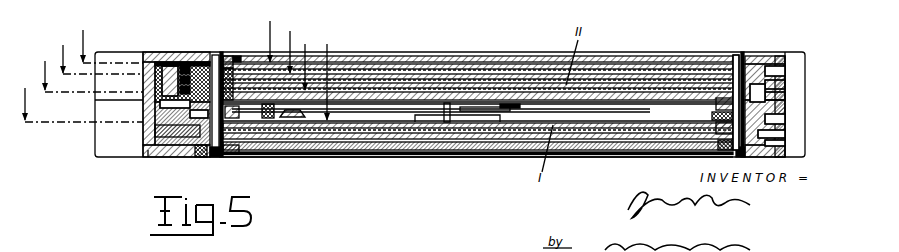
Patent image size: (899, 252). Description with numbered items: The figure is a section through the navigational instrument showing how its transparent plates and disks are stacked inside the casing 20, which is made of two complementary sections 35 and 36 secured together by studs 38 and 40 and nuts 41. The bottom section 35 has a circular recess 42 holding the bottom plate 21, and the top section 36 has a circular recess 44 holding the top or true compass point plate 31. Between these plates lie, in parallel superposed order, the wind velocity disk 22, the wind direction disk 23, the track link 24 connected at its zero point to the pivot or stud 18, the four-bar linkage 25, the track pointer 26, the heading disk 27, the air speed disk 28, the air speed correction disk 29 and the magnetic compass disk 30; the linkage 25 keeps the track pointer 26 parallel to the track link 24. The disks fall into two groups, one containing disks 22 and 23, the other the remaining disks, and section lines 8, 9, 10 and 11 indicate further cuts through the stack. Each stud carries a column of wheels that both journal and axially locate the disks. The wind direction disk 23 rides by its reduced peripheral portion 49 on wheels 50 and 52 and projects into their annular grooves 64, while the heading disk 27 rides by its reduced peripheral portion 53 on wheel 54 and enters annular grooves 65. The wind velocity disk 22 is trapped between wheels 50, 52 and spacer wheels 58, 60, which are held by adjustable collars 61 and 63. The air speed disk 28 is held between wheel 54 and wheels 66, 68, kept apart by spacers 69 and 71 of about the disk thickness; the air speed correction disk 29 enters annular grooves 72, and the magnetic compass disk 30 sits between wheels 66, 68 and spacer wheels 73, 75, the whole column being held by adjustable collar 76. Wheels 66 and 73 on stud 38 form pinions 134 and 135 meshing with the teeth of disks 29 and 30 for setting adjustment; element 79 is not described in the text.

The section line 8- 8 is at (176, 75).
The section line 9- 9 is at (175, 60).
The section line 10- 10 is at (177, 45).
The section line 11- 11 is at (179, 34).
The pivot or stud 18 is at (430, 107).
The casing 20 is at (90, 155).
The bottom plate 21 is at (462, 146).
The wind velocity disk 22 is at (432, 137).
The wind direction disk 23 is at (398, 128).
The track link 24 is at (645, 120).
The four-bar linkage 25 is at (495, 112).
The track pointer 26 is at (522, 110).
The heading disk 27 is at (485, 95).
The air speed disk 28 is at (460, 86).
The air speed correction disk 29 is at (441, 77).
The magnetic compass disk 30 is at (425, 66).
The top or true compass point plate 31 is at (400, 57).
The bottom casing section 35 is at (150, 155).
The top casing section 36 is at (163, 52).
The stud 38 is at (215, 58).
The stud 40 is at (736, 65).
The nuts 41 is at (228, 155).
The circular recess 42 is at (245, 155).
The circular recess 44 is at (238, 56).
The reduced peripheral portion 49 is at (288, 120).
The roller or wheel 50 is at (157, 132).
The roller or wheel 52 is at (784, 143).
The reduced peripheral portion 53 is at (272, 111).
The roller or wheel 54 is at (788, 95).
The spacer wheel 58 is at (203, 155).
The spacer wheel 60 is at (724, 152).
The adjustable collar 61 is at (236, 112).
The adjustable collar 63 is at (782, 118).
The annular grooves 64 is at (780, 130).
The annular grooves 65 is at (150, 88).
The wheel 66 is at (152, 72).
The wheel 68 is at (784, 72).
The spacer 69 is at (150, 82).
The spacer 71 is at (752, 72).
The annular grooves 72 is at (150, 64).
The spacer wheel 73 is at (195, 62).
The spacer wheel 75 is at (772, 62).
The adjustable collar 76 is at (199, 114).
The guide block 79 is at (714, 113).
The pinion 134 is at (248, 57).
The pinion 135 is at (242, 56).